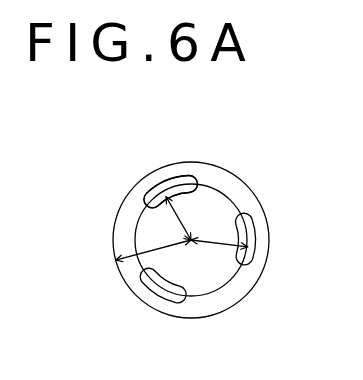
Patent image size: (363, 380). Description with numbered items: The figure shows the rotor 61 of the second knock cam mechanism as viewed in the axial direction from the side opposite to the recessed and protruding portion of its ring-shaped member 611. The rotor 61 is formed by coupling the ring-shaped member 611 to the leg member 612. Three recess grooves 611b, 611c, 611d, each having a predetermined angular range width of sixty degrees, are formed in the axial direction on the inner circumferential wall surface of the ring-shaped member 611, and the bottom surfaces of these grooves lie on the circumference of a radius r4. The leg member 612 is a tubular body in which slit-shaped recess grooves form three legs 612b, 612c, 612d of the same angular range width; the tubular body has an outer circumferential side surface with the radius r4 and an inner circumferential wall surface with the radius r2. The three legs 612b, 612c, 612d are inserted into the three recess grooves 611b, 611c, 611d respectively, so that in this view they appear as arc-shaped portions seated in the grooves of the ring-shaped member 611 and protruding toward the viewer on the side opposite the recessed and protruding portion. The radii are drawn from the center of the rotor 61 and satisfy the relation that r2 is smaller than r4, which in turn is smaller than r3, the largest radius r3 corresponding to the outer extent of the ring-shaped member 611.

The rotor 61 is at (272, 120).
The ring-shaped member 611 is at (226, 180).
The leg member 612 is at (181, 176).
The recess groove 611b is at (258, 232).
The recess groove 611c is at (147, 186).
The recess groove 611d is at (175, 304).
The leg 612b is at (253, 264).
The leg 612c is at (140, 204).
The leg 612d is at (156, 298).
The radius r2 is at (117, 222).
The radius r3 is at (127, 288).
The radius r4 is at (243, 210).